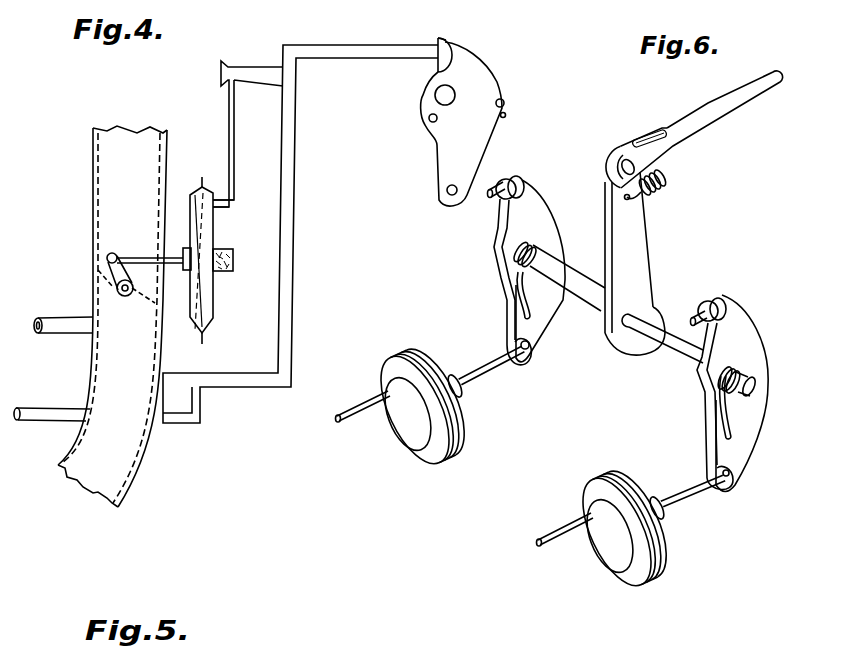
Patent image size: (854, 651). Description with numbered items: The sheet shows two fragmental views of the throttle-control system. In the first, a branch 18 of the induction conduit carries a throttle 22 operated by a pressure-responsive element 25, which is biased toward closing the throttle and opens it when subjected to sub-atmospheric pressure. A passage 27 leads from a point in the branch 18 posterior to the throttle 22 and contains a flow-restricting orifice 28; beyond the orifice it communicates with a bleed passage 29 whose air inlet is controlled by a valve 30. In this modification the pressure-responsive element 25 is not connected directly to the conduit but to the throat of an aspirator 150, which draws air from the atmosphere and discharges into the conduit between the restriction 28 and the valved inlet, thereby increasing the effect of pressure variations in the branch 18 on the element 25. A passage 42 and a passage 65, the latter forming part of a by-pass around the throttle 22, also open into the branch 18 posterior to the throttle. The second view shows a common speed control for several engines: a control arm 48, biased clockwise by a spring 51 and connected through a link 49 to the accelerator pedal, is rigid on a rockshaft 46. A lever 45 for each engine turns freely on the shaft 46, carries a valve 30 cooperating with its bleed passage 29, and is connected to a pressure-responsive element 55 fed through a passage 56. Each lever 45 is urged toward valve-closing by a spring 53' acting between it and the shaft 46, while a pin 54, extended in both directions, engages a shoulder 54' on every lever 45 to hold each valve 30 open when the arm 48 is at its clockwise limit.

In FIG. 4, the branch 18 is at (135, 445).
In FIG. 4, the throttle 22 is at (108, 283).
In FIG. 4, the pressure-responsive element 25 is at (213, 322).
In FIG. 4, the passage 27 is at (270, 386).
In FIG. 4, the flow-restricting orifice 28 is at (293, 230).
In FIG. 4, the bleed passage 29 is at (296, 150).
In FIG. 6, the bleed passage 29 is at (490, 201).
In FIG. 4, the valve 30 is at (448, 43).
In FIG. 6, the valve 30 is at (520, 172).
In FIG. 4, the passage 42 is at (67, 426).
In FIG. 4, the lever 45 is at (488, 82).
In FIG. 6, the lever 45 is at (550, 226).
In FIG. 6, the shaft 46 is at (670, 354).
In FIG. 6, the arm 48 is at (642, 270).
In FIG. 6, the link 49 is at (702, 117).
In FIG. 6, the spring 51 is at (658, 191).
In FIG. 6, the spring 53' is at (595, 362).
In FIG. 4, the pin 54 is at (522, 100).
In FIG. 6, the pin 54 is at (655, 316).
In FIG. 4, the shoulder 54' is at (527, 118).
In FIG. 6, the pressure-responsive element 55 is at (400, 428).
In FIG. 6, the passage 56 is at (357, 408).
In FIG. 4, the passage 65 is at (70, 335).
In FIG. 4, the aspirator 150 is at (258, 65).